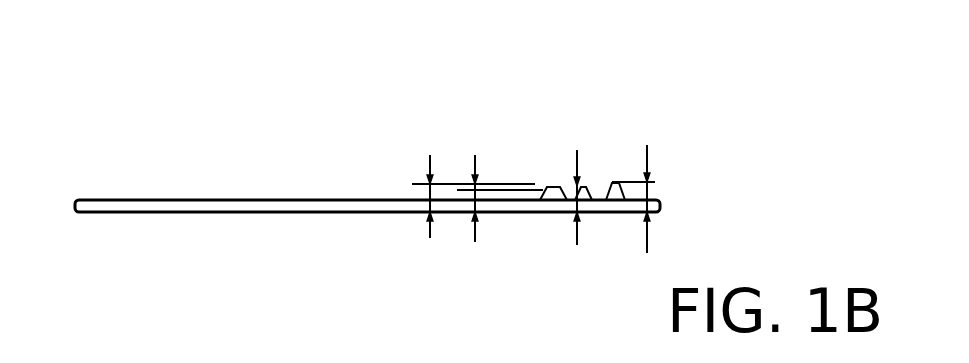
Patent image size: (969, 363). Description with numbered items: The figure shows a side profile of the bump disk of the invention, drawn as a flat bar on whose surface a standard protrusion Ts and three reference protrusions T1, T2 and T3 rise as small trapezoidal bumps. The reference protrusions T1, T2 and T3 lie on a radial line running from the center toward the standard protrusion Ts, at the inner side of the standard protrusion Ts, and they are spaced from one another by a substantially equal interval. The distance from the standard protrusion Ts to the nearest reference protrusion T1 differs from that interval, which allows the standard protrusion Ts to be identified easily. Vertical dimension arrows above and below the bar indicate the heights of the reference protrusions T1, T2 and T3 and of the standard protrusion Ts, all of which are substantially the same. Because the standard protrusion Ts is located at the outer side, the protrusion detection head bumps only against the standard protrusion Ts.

The reference protrusion T1 is at (583, 204).
The reference protrusion T2 is at (566, 203).
The reference protrusion T3 is at (543, 202).
The standard protrusion Ts is at (607, 188).